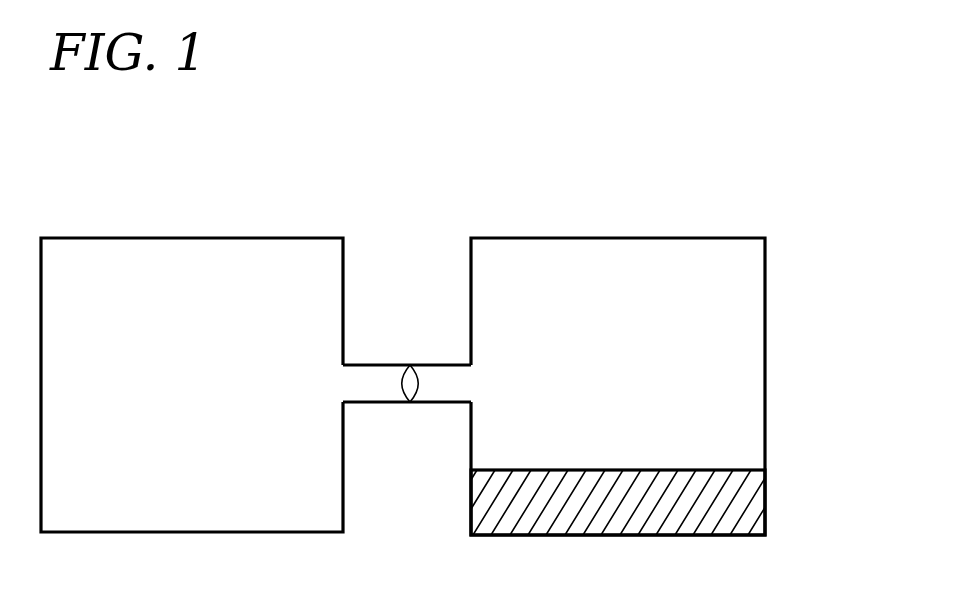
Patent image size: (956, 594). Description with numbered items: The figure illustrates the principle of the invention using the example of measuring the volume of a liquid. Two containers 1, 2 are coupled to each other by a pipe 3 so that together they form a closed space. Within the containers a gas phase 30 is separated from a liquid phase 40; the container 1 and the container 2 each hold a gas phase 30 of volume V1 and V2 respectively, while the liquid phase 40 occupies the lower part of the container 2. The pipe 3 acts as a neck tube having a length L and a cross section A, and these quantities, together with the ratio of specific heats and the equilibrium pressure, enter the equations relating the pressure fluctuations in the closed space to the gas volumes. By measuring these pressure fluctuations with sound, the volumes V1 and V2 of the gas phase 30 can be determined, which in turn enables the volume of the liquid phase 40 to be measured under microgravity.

The container 1 is at (277, 238).
The container 2 is at (723, 238).
The pipe 3 is at (377, 384).
The gas phase 30 is at (158, 273).
The liquid phase 40 is at (765, 500).
The cross section of the neck tube A is at (402, 337).
The length of the neck tube L is at (343, 439).